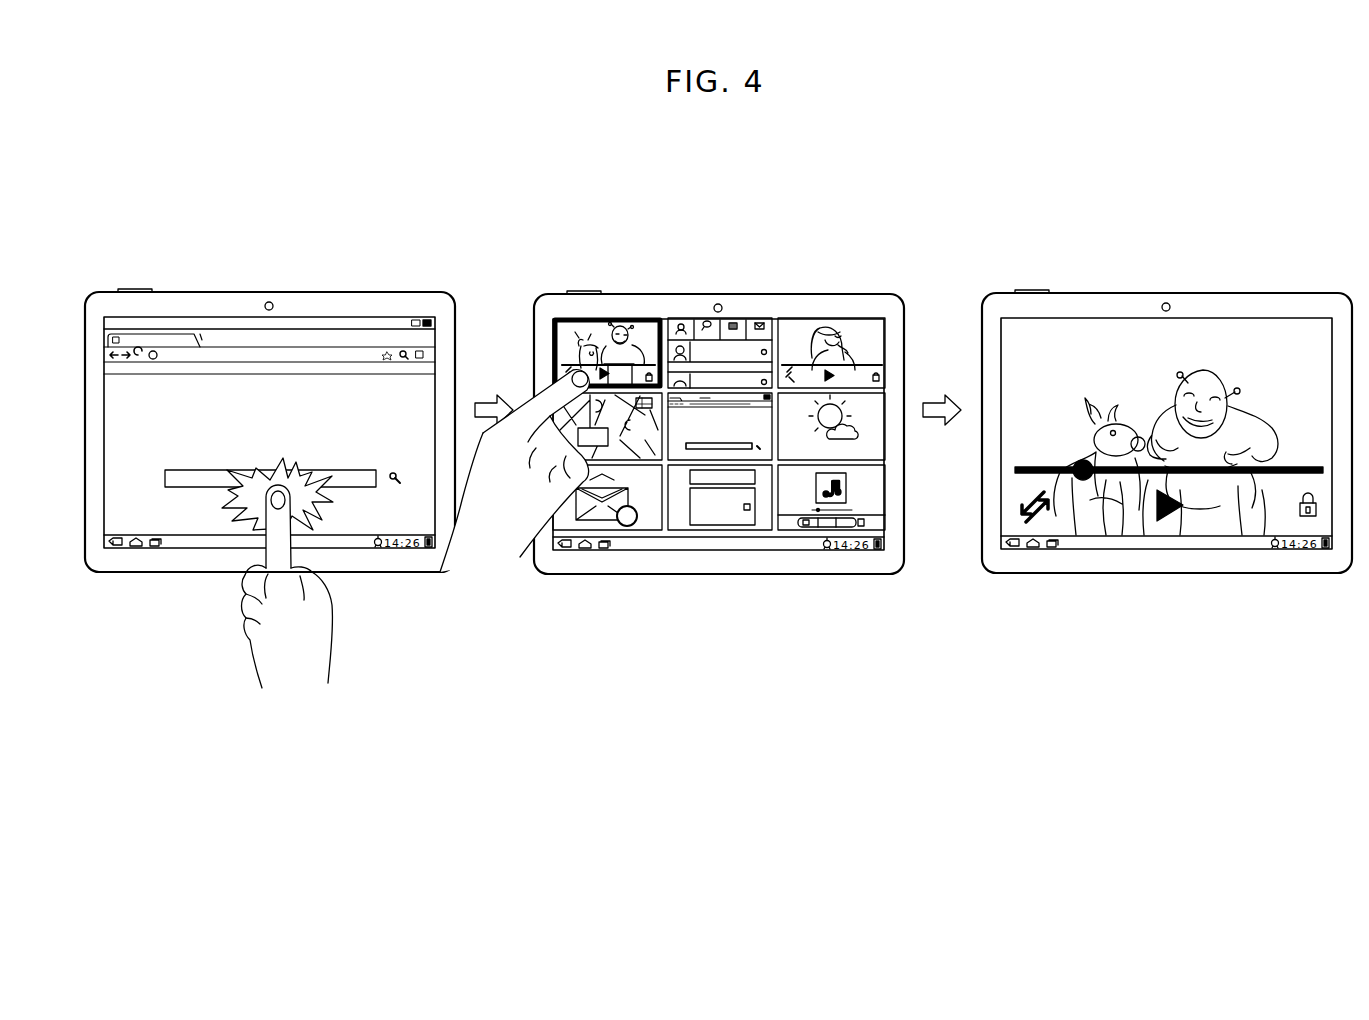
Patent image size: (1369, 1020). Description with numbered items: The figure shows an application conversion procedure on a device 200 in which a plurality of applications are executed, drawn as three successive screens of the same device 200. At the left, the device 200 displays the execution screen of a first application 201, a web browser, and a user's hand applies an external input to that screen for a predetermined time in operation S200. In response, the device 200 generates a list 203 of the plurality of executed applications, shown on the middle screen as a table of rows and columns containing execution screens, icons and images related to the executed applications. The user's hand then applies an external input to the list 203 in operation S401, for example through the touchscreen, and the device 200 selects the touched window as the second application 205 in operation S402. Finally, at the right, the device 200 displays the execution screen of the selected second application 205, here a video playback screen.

The device 200 is at (388, 290).
The first application 201 is at (339, 390).
The list 203 is at (781, 320).
The second application 205 is at (1245, 337).
The operation of receiving an external input S200 is at (292, 665).
The operation of receiving an external input for selecting an execution screen S401 is at (498, 532).
The operation of selecting an application as the second application S402 is at (633, 320).